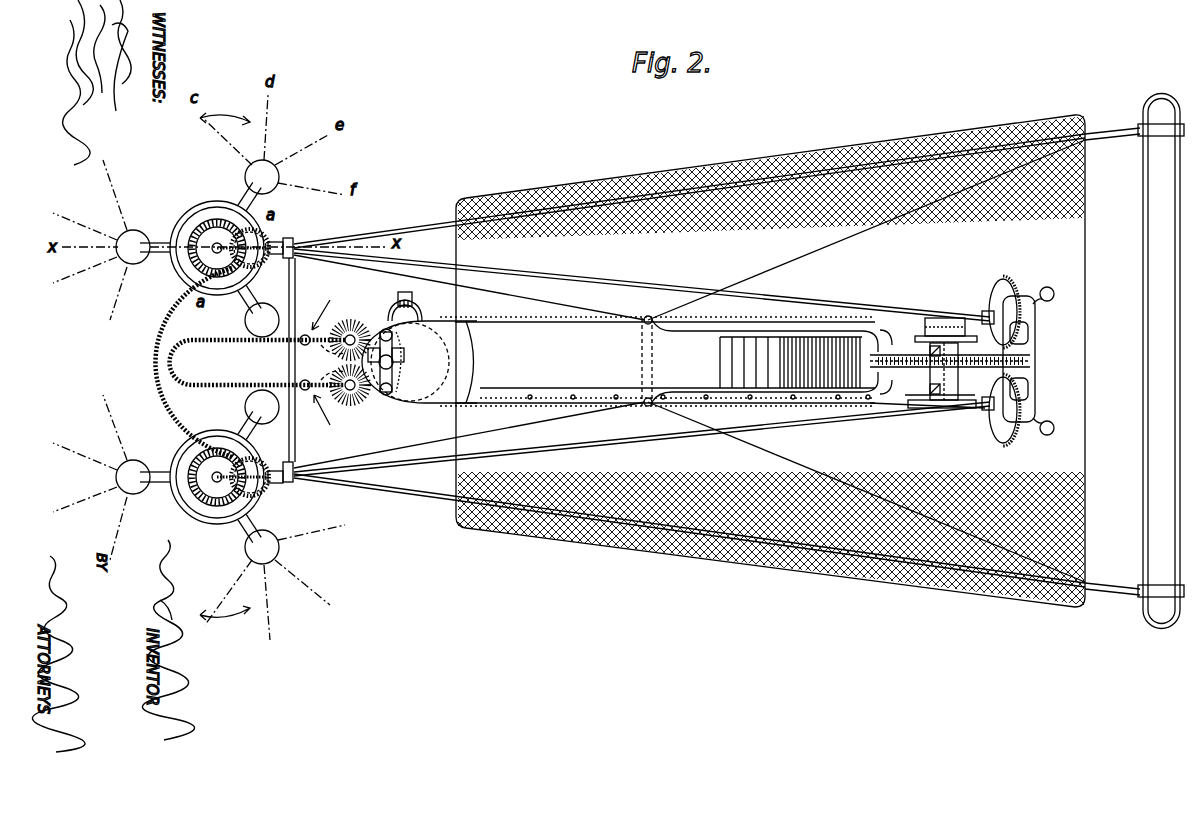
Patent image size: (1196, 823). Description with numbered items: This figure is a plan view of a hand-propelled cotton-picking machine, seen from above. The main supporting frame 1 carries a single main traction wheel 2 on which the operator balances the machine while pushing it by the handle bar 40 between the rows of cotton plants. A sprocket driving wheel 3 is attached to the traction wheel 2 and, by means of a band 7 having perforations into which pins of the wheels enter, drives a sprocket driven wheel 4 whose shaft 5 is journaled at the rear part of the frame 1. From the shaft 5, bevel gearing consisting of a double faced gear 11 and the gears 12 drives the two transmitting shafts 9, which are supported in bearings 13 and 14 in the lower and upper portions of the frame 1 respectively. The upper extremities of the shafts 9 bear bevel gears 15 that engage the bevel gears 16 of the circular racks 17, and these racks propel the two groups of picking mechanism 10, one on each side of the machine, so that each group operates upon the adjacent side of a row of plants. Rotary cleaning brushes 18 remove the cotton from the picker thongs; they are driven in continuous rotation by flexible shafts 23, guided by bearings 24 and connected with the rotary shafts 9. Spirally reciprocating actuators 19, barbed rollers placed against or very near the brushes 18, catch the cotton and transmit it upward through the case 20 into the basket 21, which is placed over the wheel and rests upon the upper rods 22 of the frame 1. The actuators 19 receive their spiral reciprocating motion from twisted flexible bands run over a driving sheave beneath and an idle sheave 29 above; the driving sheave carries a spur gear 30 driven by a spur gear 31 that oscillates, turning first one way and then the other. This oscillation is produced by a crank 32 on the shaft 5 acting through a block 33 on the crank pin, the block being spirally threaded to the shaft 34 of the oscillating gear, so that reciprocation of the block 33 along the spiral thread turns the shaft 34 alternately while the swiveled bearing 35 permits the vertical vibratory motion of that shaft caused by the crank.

The main supporting frame 1 is at (506, 318).
The traction wheel 2 is at (665, 362).
The sprocket driving wheel 3 is at (718, 398).
The sprocket driven wheel 4 is at (940, 410).
The shaft 5 is at (960, 370).
The band 7 is at (892, 412).
The transmitting shafts 9 is at (672, 285).
The groups of picking mechanism 10 is at (214, 206).
The double faced gear 11 is at (1030, 359).
The gears 12 is at (1010, 278).
The bearings 13 is at (1036, 316).
The bearings 14 is at (288, 240).
The bevel gears 15 is at (243, 362).
The bevel gears 16 is at (217, 362).
The circular racks 17 is at (228, 232).
The rotary cleaning brushes 18 is at (360, 323).
The spirally reciprocating actuators 19 is at (368, 333).
The case 20 is at (419, 362).
The basket 21 is at (705, 176).
The upper rods 22 is at (432, 222).
The flexible shafts 23 is at (1046, 399).
The bearings 24 is at (321, 354).
The idle sheave 29 is at (400, 372).
The spur gear 30 is at (402, 362).
The spur gear 31 is at (404, 298).
The crank 32 is at (924, 339).
The block 33 is at (950, 318).
The shaft 34 is at (786, 329).
The bearing 35 is at (422, 303).
The handle bar 40 is at (1134, 361).